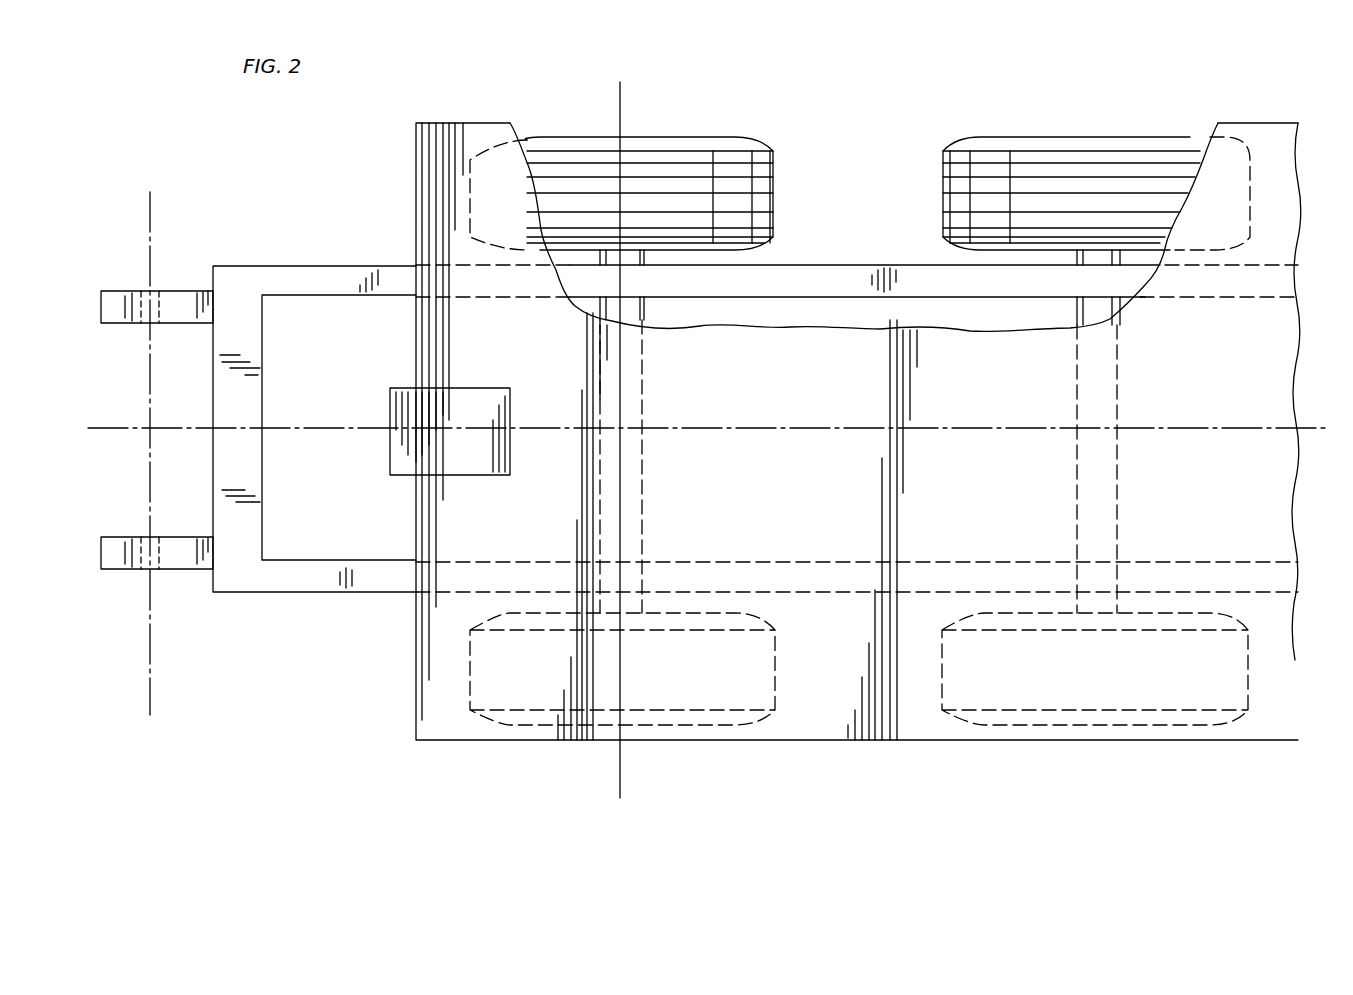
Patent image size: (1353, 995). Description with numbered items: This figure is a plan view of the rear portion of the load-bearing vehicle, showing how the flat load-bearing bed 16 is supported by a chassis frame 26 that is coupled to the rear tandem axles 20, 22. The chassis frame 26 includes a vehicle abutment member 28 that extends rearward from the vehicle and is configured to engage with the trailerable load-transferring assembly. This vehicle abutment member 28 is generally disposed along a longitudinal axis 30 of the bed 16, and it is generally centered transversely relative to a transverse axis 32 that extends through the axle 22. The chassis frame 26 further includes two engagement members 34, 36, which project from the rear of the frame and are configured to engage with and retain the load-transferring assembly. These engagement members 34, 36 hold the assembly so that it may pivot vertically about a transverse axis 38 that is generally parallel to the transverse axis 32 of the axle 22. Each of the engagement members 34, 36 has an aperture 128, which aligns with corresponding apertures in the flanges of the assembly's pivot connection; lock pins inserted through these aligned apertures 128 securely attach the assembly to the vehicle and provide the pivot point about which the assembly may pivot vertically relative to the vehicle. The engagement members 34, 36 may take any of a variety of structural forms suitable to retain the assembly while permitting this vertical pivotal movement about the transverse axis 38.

The load-bearing bed 16 is at (921, 722).
The rear tandem axle 20 is at (1081, 601).
The rear tandem axle 22 is at (640, 250).
The chassis frame 26 is at (839, 280).
The vehicle abutment member 28 is at (401, 460).
The longitudinal axis 30 is at (1313, 430).
The transverse axis 32 is at (620, 782).
The engagement member 34 is at (108, 300).
The engagement member 36 is at (107, 568).
The transverse axis 38 is at (150, 685).
The aperture 128 is at (157, 305).